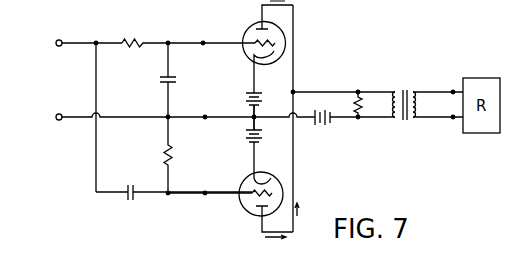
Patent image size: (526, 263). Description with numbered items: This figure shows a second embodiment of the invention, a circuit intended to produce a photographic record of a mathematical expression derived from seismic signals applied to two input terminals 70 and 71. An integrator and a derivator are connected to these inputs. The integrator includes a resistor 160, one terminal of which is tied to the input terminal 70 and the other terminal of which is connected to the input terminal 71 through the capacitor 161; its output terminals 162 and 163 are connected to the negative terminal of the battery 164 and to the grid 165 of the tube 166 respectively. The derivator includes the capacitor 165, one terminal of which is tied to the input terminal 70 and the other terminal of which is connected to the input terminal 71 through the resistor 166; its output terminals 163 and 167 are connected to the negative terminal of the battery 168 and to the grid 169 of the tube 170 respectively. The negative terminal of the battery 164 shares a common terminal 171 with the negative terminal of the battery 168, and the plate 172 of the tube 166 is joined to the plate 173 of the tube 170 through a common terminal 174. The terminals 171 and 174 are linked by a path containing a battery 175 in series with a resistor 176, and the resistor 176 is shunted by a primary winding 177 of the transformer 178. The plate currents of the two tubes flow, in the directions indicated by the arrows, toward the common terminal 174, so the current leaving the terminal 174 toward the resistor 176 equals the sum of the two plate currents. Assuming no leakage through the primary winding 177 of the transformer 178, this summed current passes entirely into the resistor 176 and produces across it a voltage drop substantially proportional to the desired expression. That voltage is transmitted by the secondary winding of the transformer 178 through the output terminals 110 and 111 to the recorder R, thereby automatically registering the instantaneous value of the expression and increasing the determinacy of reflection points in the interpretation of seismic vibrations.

The input terminal 70 is at (76, 44).
The input terminal 71 is at (100, 118).
The resistor 160 is at (159, 35).
The capacitor 161 is at (153, 80).
The output terminal 162 is at (203, 43).
The output terminal 163 is at (204, 116).
The battery 164 is at (268, 105).
The capacitor / grid 165 is at (251, 55).
The resistor / tube 166 is at (243, 14).
The output terminal 167 is at (204, 196).
The battery 168 is at (268, 150).
The grid 169 is at (247, 189).
The tube 170 is at (250, 214).
The common terminal 171 is at (252, 120).
The plate 172 is at (256, 30).
The plate 173 is at (248, 206).
The common terminal 174 is at (343, 118).
The battery 175 is at (351, 128).
The resistor 176 is at (356, 104).
The primary winding 177 is at (392, 92).
The transformer 178 is at (405, 124).
The output terminal 110 is at (438, 84).
The output terminal 111 is at (438, 130).